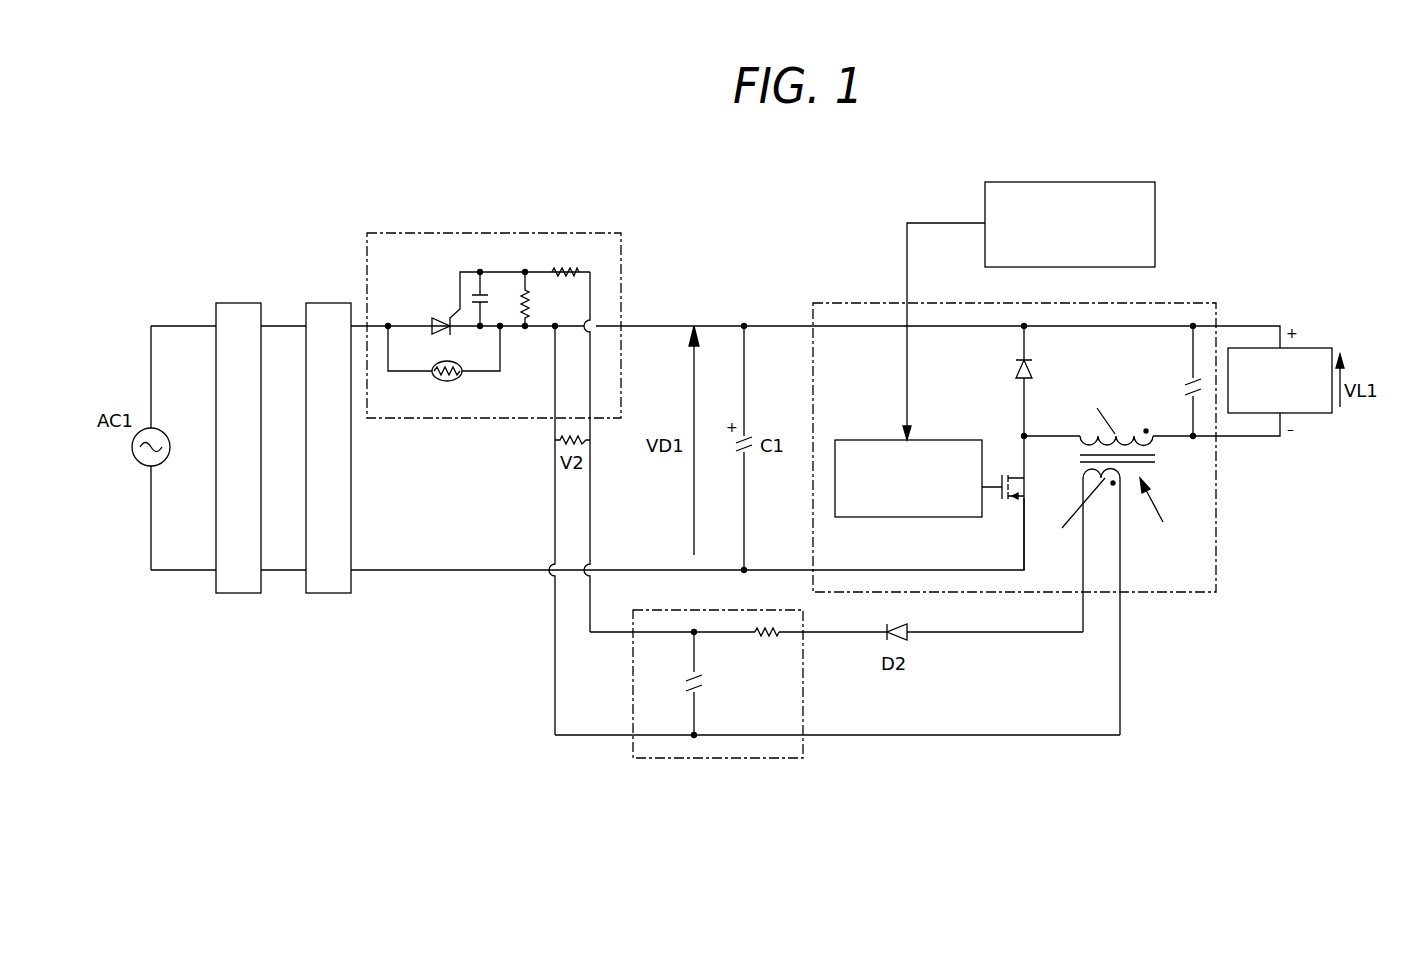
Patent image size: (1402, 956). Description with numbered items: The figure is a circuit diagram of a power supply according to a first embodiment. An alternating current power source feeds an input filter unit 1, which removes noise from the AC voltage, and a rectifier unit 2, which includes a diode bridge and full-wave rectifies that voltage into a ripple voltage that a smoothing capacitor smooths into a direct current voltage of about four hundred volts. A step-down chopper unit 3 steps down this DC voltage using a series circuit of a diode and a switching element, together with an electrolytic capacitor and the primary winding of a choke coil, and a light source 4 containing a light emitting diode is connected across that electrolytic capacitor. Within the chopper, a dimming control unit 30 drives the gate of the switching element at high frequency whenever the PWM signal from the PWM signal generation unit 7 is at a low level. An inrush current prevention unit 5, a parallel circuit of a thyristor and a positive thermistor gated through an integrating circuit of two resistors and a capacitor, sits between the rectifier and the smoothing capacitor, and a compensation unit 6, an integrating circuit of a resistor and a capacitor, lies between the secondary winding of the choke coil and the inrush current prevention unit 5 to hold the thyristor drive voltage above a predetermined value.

The input filter unit 1 is at (238, 301).
The rectifier unit 2 is at (328, 301).
The step-down chopper unit 3 is at (1175, 303).
The light source 4 is at (1303, 348).
The inrush current prevention unit 5 is at (598, 233).
The compensation unit 6 is at (805, 667).
The PWM signal generation unit 7 is at (1156, 201).
The dimming control unit 30 is at (855, 439).